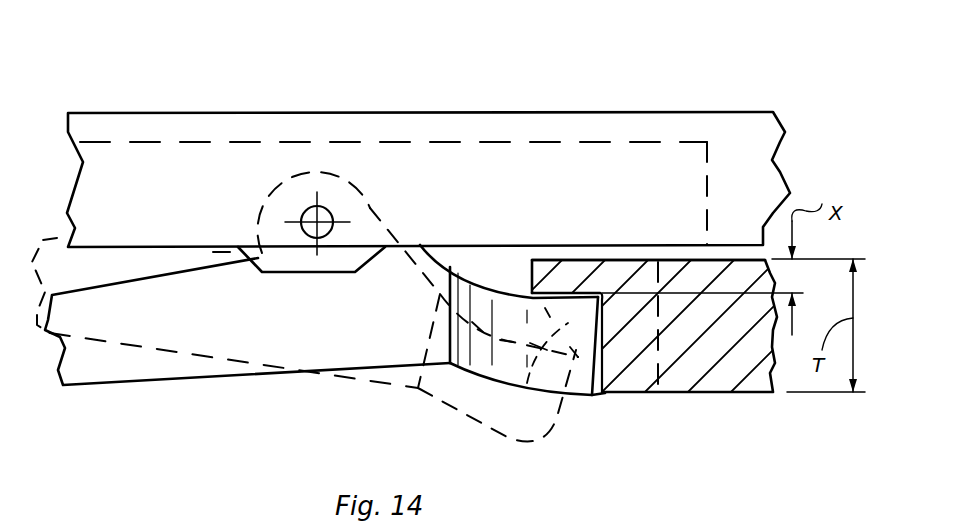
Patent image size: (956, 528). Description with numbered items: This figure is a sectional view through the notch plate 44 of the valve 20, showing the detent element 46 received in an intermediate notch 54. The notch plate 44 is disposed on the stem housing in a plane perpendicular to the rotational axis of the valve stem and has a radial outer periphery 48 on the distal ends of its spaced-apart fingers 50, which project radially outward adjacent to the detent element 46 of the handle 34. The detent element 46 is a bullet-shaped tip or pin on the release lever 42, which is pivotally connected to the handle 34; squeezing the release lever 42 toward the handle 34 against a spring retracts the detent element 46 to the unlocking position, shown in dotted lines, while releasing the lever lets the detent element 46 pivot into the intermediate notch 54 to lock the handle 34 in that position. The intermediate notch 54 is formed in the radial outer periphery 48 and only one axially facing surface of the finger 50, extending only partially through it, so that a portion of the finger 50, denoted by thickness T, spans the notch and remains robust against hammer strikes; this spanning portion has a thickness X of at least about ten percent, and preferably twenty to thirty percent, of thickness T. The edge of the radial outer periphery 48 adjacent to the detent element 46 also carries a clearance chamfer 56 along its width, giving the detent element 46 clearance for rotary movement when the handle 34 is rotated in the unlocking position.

The valve 20 is at (450, 146).
The handle 34 is at (621, 110).
The release lever 42 is at (144, 347).
The notch plate 44 is at (646, 326).
The detent element 46 is at (517, 344).
The radial outer periphery 48 is at (533, 290).
The fingers 50 is at (595, 258).
The intermediate notch 54 is at (597, 394).
The clearance chamfer 56 is at (565, 327).